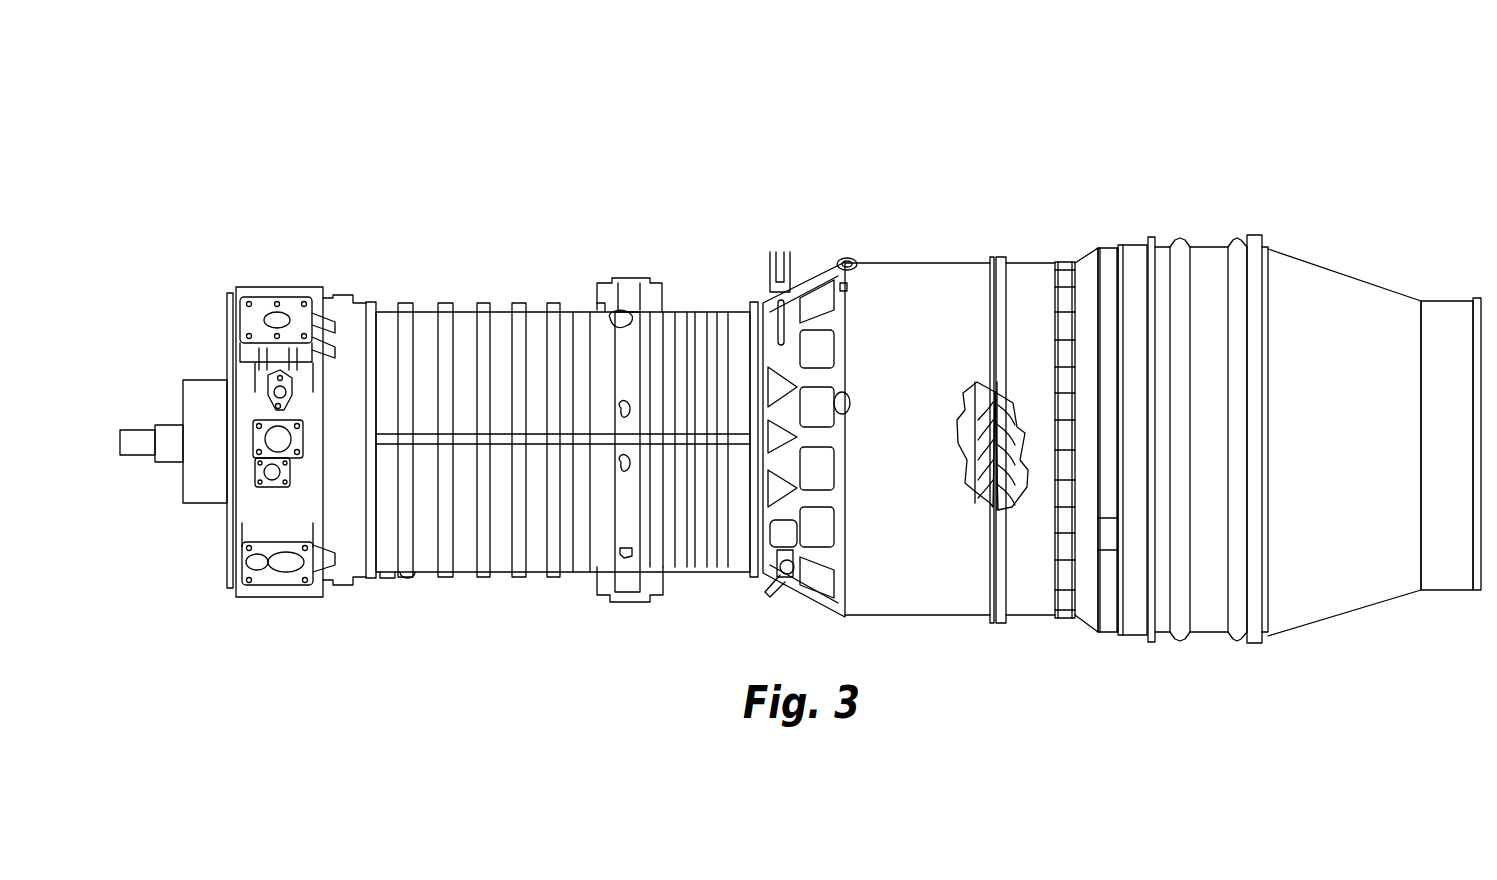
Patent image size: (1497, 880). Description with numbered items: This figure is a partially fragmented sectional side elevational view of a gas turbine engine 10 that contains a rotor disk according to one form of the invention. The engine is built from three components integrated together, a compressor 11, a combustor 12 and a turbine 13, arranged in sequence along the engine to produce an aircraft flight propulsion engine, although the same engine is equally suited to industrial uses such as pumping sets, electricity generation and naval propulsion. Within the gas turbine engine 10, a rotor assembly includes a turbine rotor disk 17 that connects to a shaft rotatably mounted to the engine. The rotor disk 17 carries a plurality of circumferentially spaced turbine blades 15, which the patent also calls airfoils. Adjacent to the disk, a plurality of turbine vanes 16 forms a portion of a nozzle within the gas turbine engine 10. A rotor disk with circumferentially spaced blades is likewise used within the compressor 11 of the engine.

The gas turbine engine 10 is at (1389, 163).
The compressor 11 is at (462, 571).
The combustor 12 is at (927, 263).
The turbine 13 is at (1213, 247).
The turbine blades 15 is at (1013, 403).
The turbine vanes 16 is at (975, 497).
The turbine rotor disk 17 is at (1013, 507).